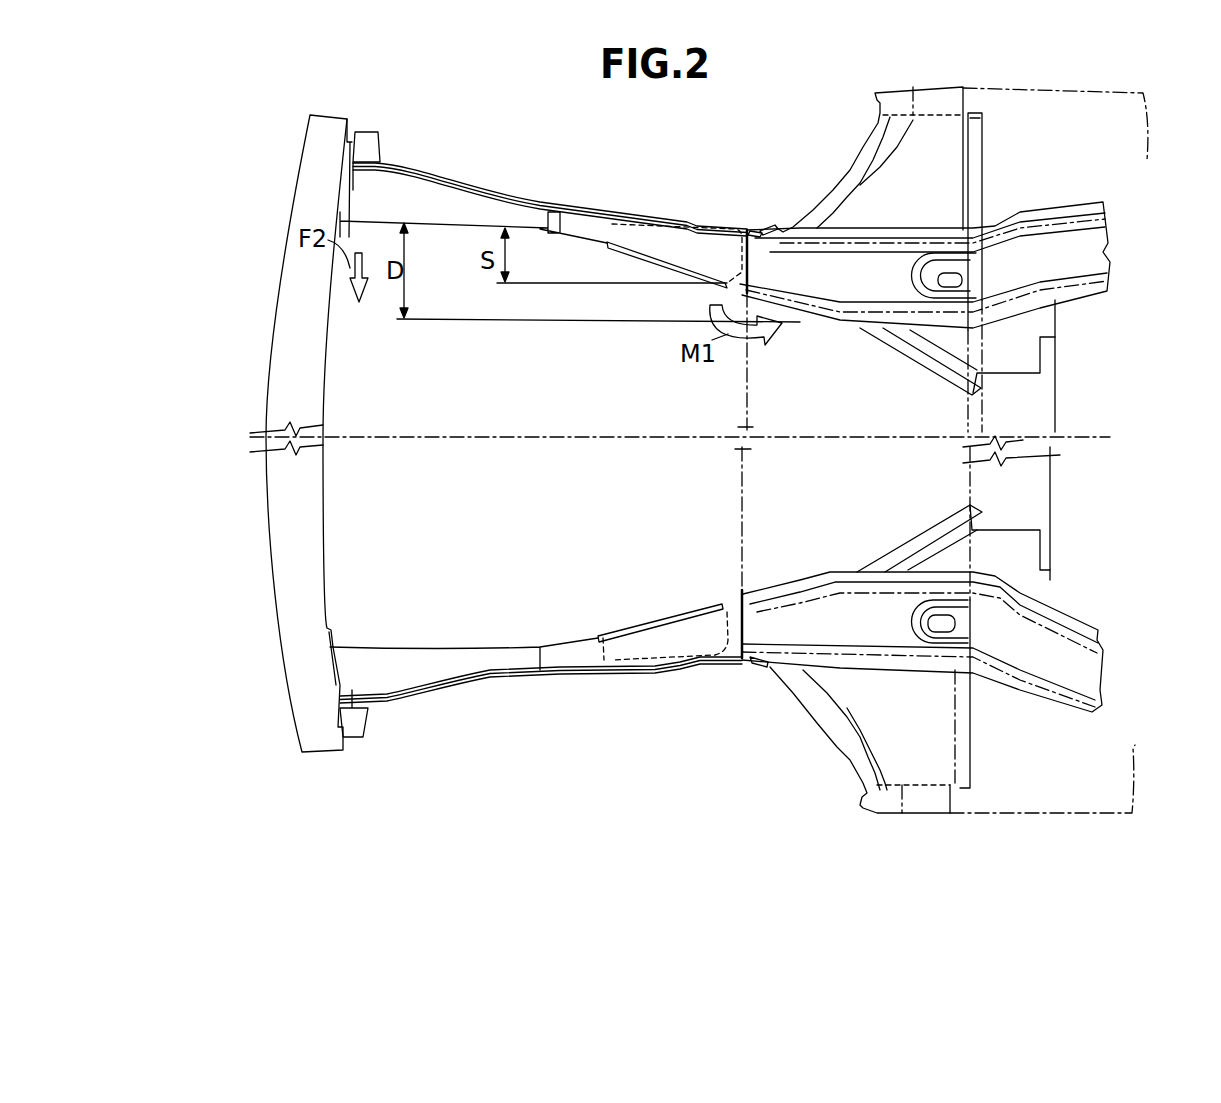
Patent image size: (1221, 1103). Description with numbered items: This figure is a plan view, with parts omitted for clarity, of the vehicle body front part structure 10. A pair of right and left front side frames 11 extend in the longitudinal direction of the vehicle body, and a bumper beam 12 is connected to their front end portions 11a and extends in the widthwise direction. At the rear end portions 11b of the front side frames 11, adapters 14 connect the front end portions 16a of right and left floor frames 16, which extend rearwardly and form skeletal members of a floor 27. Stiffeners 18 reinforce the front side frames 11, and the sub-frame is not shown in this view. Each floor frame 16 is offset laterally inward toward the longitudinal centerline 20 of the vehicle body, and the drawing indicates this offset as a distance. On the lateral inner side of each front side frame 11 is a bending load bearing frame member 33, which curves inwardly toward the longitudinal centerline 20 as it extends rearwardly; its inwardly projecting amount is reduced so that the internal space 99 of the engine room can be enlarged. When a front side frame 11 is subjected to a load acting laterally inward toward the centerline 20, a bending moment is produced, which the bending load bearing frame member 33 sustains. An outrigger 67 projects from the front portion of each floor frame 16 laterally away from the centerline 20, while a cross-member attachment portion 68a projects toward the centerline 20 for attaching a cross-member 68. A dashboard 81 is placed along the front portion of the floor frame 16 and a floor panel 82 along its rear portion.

The vehicle body front part structure 10 is at (238, 160).
The front side frame 11 is at (528, 207).
The front end portion of front side frame 11a is at (360, 132).
The rear end portion of front side frame 11b is at (740, 235).
The bumper beam 12 is at (283, 268).
The adapter 14 is at (765, 220).
The floor frame 16 is at (925, 233).
The front end portion of floor frame 16a is at (820, 283).
The stiffener 18 is at (655, 265).
The longitudinal centerline 20 is at (484, 440).
The floor 27 is at (1080, 202).
The bending load bearing frame member 33 is at (652, 240).
The outrigger 67 is at (930, 122).
The cross-member 68 is at (1042, 488).
The cross-member attachment portion 68a is at (1045, 320).
The dashboard 81 is at (742, 378).
The floor panel 82 is at (1135, 760).
The internal space of the engine room 99 is at (626, 489).